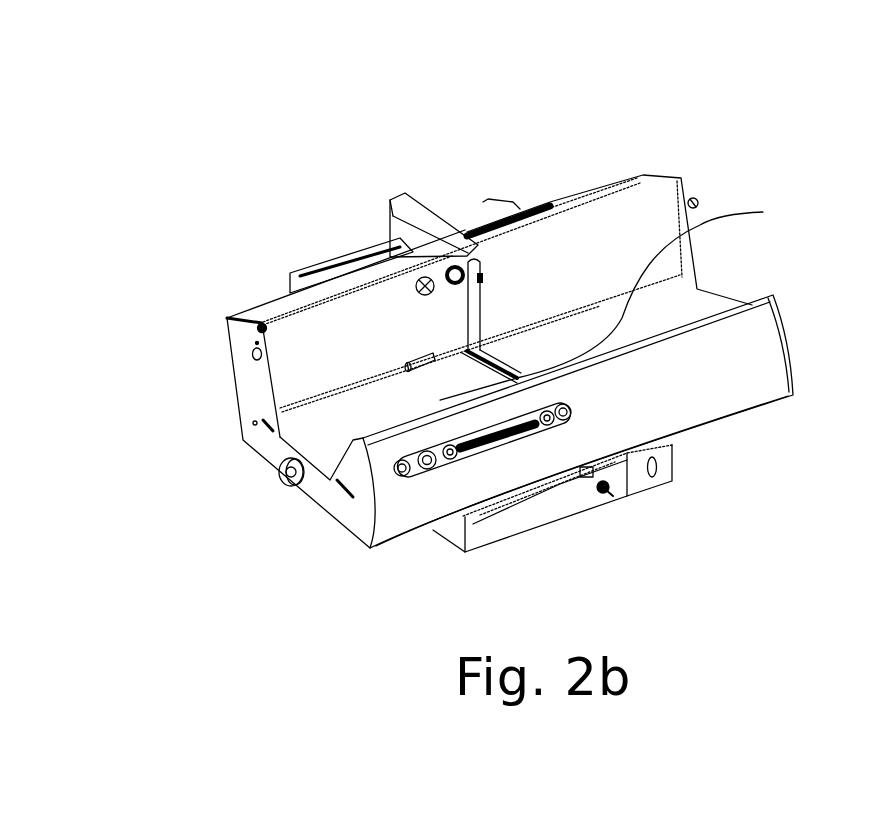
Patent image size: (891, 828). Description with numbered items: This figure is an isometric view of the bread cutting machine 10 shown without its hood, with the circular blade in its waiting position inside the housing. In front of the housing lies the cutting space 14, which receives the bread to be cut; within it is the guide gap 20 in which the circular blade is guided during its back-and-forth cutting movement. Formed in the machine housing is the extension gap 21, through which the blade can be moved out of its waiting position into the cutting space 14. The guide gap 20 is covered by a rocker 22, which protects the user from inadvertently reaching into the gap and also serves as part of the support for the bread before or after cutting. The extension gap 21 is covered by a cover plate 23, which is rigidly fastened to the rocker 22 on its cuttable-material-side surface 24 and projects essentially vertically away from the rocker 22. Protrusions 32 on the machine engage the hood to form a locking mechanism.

The bread cutting machine 10 is at (678, 127).
The cutting space 14 is at (363, 407).
The guide gap 20 is at (477, 373).
The extension gap 21 is at (484, 307).
The rocker 22 is at (493, 363).
The cover plate 23 is at (390, 223).
The cuttable-material-side surface 24 is at (586, 366).
The protrusion 32 is at (698, 197).